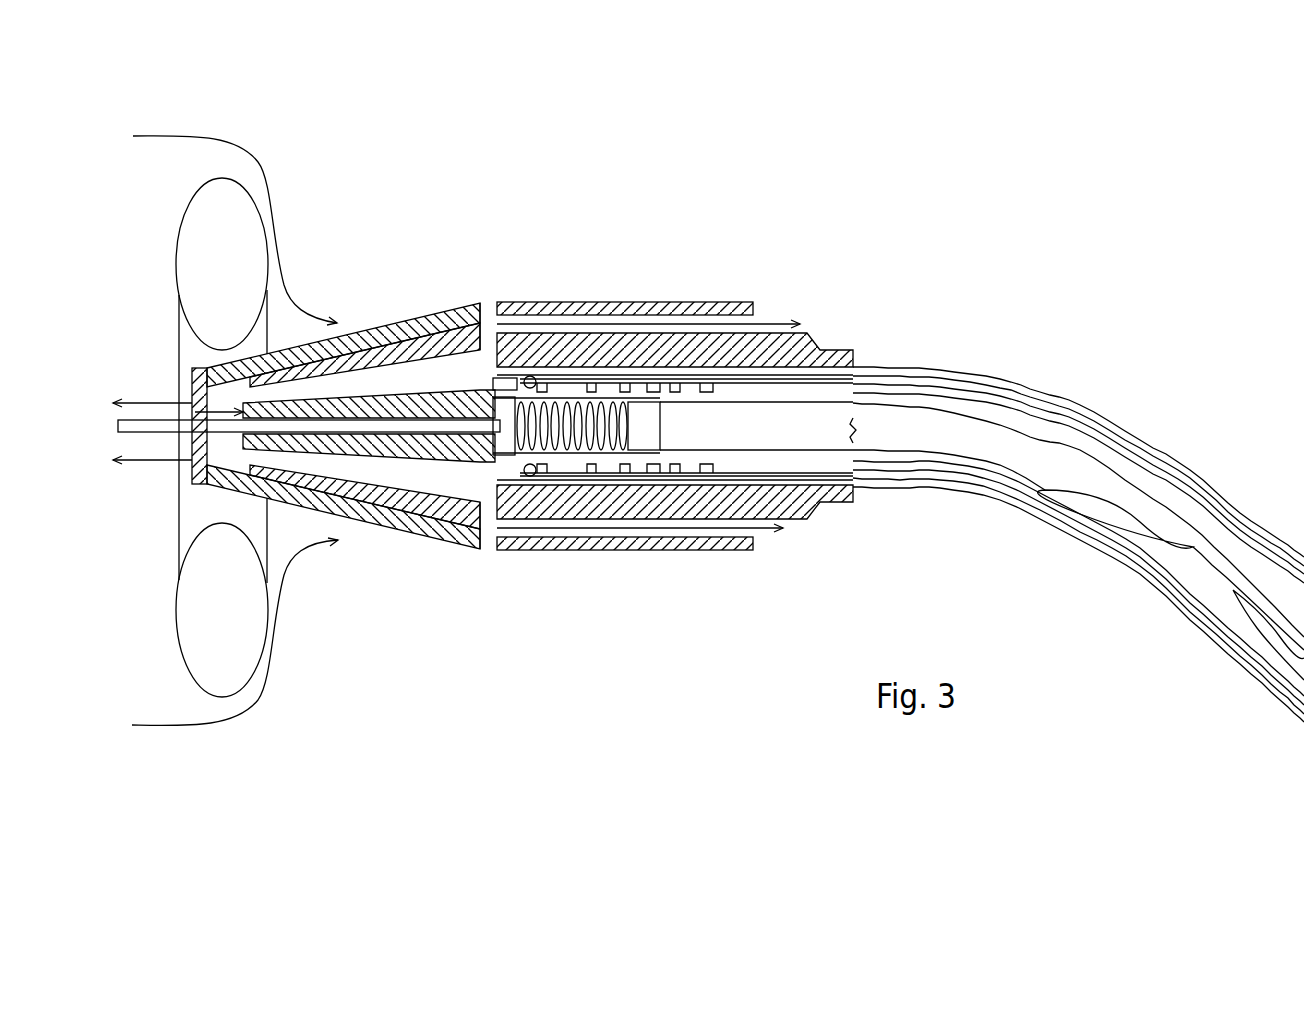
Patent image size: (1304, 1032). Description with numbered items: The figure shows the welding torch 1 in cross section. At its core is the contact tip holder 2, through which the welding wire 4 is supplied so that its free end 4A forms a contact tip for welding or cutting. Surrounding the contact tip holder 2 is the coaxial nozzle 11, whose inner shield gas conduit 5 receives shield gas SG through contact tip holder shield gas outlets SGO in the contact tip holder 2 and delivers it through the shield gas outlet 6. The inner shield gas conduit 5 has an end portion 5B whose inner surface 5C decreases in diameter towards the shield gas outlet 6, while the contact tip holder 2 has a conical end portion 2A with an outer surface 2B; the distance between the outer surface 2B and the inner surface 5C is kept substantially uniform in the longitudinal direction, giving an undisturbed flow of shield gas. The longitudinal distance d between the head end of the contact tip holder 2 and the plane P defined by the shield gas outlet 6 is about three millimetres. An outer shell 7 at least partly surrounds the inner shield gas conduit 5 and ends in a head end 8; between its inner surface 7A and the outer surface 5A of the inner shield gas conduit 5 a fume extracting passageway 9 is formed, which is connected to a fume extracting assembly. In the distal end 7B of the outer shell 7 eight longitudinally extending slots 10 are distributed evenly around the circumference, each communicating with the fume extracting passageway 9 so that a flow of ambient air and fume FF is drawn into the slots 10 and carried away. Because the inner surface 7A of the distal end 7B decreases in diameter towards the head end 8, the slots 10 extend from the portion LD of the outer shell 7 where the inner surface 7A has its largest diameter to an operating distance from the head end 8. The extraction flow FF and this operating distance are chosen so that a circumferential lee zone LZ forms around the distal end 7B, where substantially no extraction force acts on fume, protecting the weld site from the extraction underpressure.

The welding torch 1 is at (952, 317).
The contact tip holder 2 is at (428, 537).
The conical end portion 2A is at (348, 333).
The outer surface 2B is at (313, 452).
The welding wire 4 is at (147, 432).
The free end 4A is at (118, 430).
The inner shield gas conduit 5 is at (406, 322).
The outer surface 5A is at (550, 337).
The end portion 5B is at (372, 360).
The inner surface 5C is at (450, 330).
The shield gas outlet 6 is at (195, 390).
The outer shell 7 is at (533, 322).
The inner surface 7A is at (643, 318).
The distal end 7B is at (375, 560).
The head end 8 is at (180, 387).
The fume extracting passageway 9 is at (473, 322).
The openings 10 is at (368, 388).
The coaxial nozzle 11 is at (457, 588).
The lee zone LZ is at (222, 437).
The fume flow FF is at (262, 163).
The shield gas SG is at (132, 402).
The contact tip holder shield gas outlets SGO is at (483, 550).
The portion of largest diameter LD is at (490, 322).
The plane P is at (202, 483).
The distance d is at (230, 480).